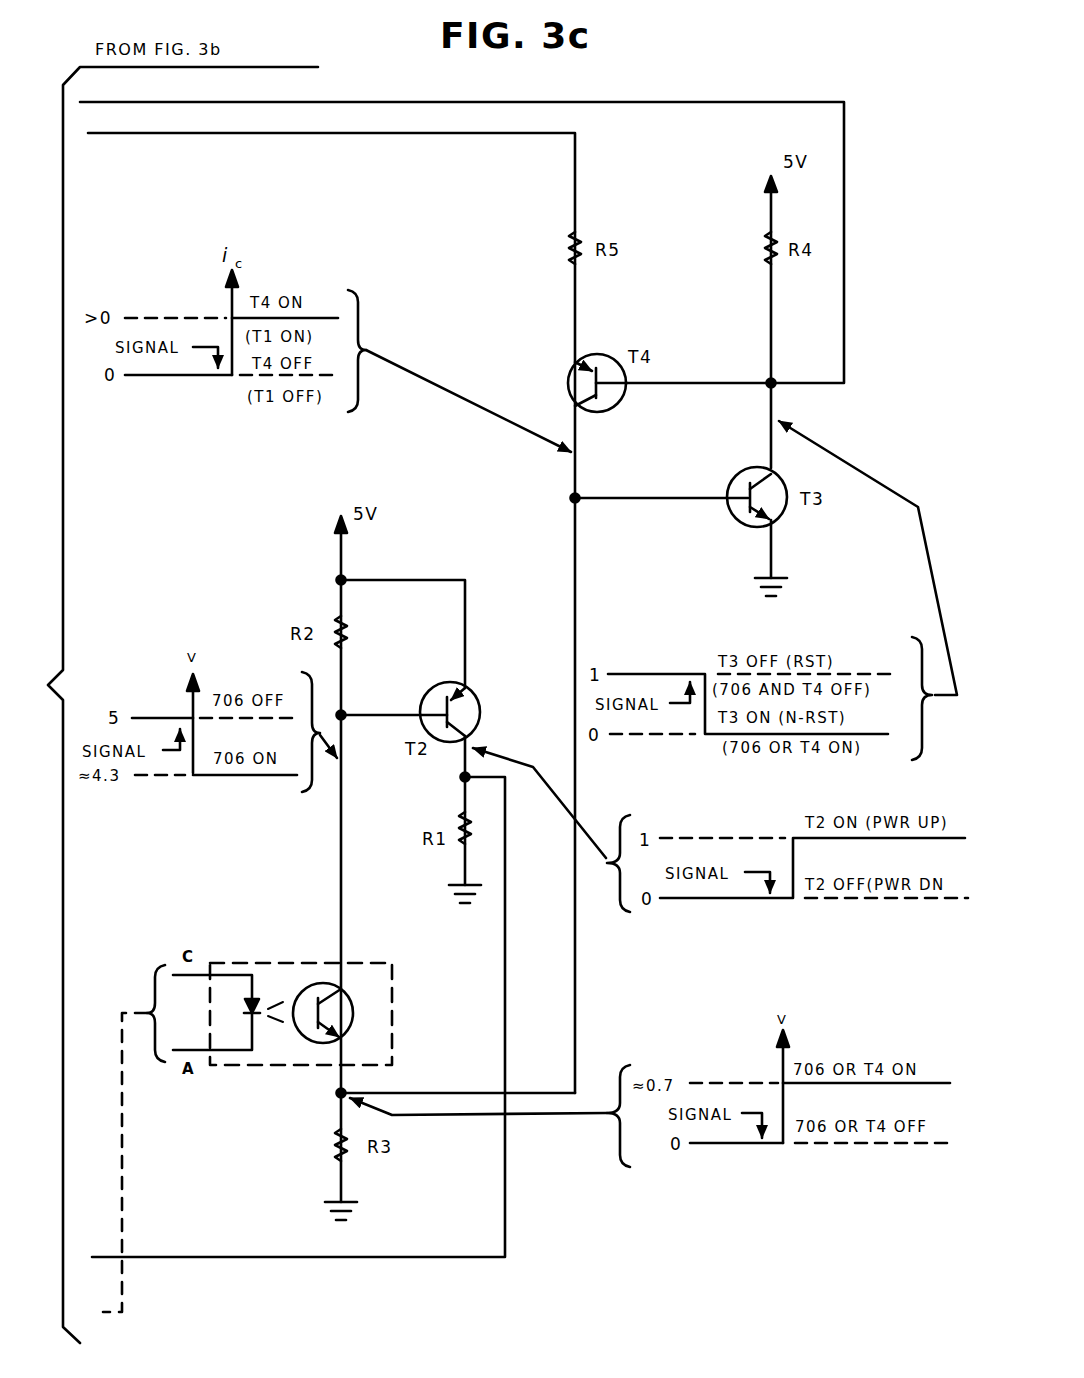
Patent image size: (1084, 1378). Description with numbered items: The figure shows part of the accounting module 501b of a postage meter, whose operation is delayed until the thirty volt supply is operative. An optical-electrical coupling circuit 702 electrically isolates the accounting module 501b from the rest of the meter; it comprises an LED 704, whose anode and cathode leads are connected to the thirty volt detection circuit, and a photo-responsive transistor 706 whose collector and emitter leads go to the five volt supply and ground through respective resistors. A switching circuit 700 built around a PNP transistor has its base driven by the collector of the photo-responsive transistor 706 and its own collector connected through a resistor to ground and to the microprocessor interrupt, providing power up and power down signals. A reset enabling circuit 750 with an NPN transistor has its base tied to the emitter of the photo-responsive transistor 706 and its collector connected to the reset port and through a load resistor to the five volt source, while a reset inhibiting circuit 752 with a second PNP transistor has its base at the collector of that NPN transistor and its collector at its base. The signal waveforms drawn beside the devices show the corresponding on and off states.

The accounting module 501b is at (818, 79).
The reset inhibiting circuit 752 is at (556, 361).
The reset enabling circuit 750 is at (734, 533).
The switching circuit 700 is at (484, 681).
The optical-electrical coupling circuit 702 is at (235, 963).
The LED 704 is at (257, 1035).
The photo-responsive transistor 706 is at (310, 985).